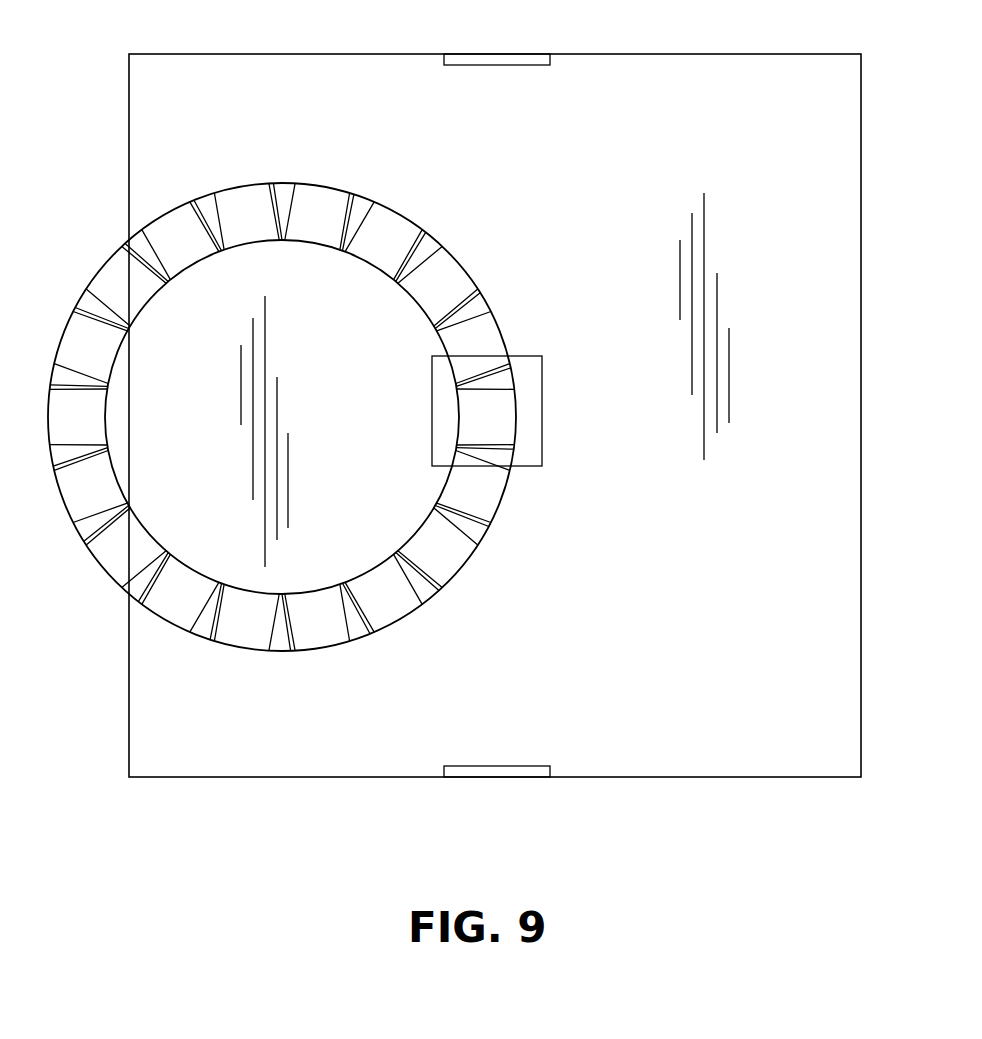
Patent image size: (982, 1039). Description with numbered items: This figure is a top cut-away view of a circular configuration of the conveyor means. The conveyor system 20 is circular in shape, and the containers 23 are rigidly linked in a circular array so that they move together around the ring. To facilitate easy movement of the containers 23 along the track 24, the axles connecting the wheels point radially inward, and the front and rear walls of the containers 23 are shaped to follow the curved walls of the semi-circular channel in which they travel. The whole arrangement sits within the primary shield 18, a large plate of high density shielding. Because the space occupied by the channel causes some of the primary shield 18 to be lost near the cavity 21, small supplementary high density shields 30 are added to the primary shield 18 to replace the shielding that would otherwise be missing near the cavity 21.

The primary shield 18 is at (691, 748).
The conveyor system 20 is at (78, 238).
The cavity 21 is at (527, 368).
The containers 23 is at (112, 548).
The track 24 is at (284, 190).
The supplementary high density shields 30 is at (507, 65).